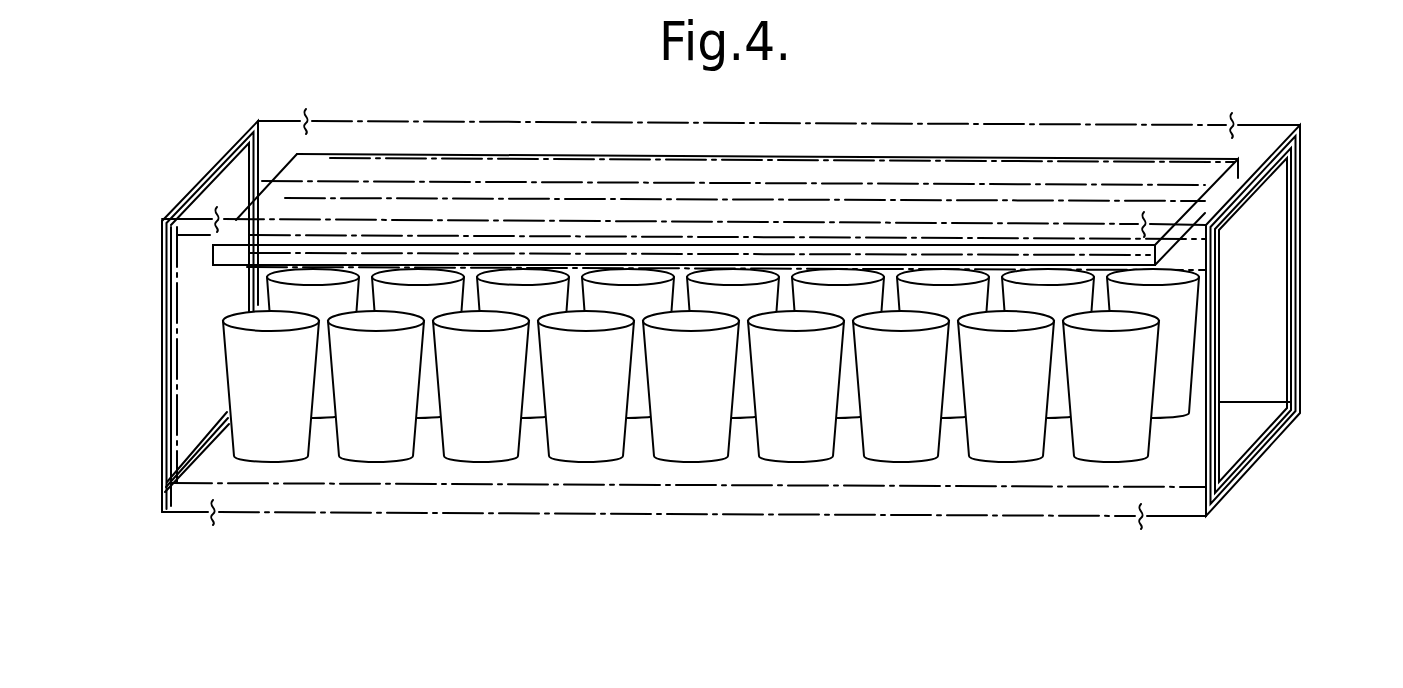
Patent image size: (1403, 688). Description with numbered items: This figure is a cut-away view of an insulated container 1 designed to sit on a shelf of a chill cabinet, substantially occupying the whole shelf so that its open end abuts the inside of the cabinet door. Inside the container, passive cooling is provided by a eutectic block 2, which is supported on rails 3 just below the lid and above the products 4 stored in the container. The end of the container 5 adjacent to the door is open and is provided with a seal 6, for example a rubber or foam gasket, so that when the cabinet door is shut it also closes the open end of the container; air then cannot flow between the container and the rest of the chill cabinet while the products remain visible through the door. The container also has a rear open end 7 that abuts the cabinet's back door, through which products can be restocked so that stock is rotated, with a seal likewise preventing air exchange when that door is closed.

The insulated container 1 is at (1310, 123).
The eutectic block 2 is at (482, 177).
The rails 3 is at (250, 180).
The products 4 is at (267, 433).
The end of the container 5 is at (1273, 367).
The seal 6 is at (1302, 233).
The rear open end 7 is at (140, 371).